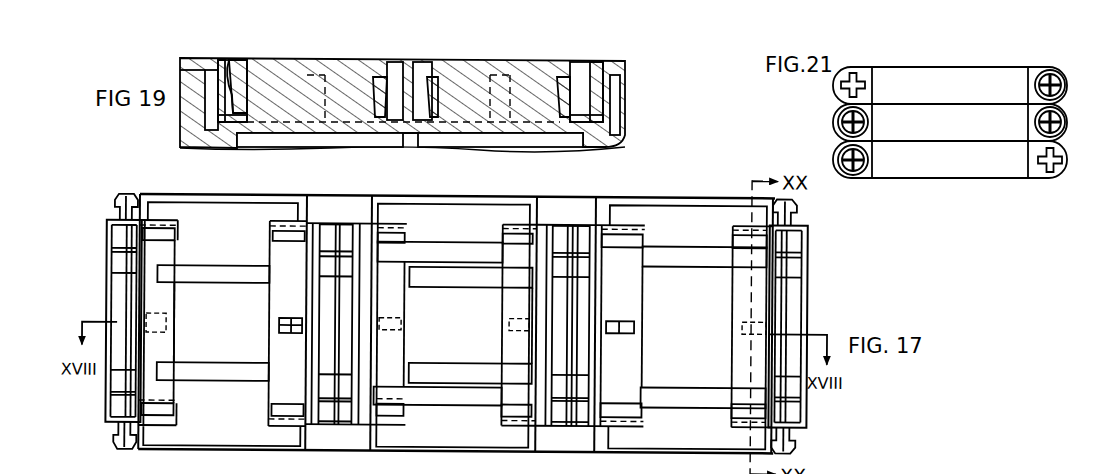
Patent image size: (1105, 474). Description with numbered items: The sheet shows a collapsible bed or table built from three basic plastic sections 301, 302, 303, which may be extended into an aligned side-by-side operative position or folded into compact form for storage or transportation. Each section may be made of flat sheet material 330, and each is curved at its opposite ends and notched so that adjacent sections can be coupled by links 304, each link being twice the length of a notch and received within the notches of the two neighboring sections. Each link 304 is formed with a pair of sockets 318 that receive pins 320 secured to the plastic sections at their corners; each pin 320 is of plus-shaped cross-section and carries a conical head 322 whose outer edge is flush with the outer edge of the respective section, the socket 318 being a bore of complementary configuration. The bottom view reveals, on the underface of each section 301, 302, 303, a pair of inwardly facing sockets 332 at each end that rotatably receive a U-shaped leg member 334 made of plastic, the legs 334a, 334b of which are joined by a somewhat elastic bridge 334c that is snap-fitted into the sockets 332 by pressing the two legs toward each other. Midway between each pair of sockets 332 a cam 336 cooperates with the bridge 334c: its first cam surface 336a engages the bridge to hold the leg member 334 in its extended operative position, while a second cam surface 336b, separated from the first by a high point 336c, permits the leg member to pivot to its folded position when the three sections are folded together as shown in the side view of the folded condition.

In FIG. 19, the plastic section 301 is at (190, 62).
In FIG. 21, the plastic section 301 is at (968, 172).
In FIG. 17, the plastic section 301 is at (253, 212).
In FIG. 19, the plastic section 302 is at (608, 66).
In FIG. 21, the plastic section 302 is at (968, 134).
In FIG. 17, the plastic section 302 is at (437, 212).
In FIG. 21, the plastic section 303 is at (968, 97).
In FIG. 17, the plastic section 303 is at (662, 212).
In FIG. 19, the link 304 is at (222, 66).
In FIG. 21, the link 304 is at (834, 126).
In FIG. 19, the socket 318 is at (240, 80).
In FIG. 19, the pin 320 is at (283, 75).
In FIG. 21, the pin 320 is at (848, 72).
In FIG. 17, the pin 320 is at (116, 208).
In FIG. 19, the conical head 322 is at (363, 72).
In FIG. 17, the flat sheet material 330 is at (221, 466).
In FIG. 17, the inwardly facing socket 332 is at (165, 213).
In FIG. 17, the U-shaped leg member 334 is at (172, 297).
In FIG. 17, the leg 334a is at (200, 272).
In FIG. 17, the leg 334b is at (198, 372).
In FIG. 17, the bridge 334c is at (170, 343).
In FIG. 17, the cam 336 is at (170, 320).
In FIG. 17, the first cam surface 336a is at (286, 324).
In FIG. 17, the second cam surface 336b is at (288, 330).
In FIG. 17, the high point 336c is at (294, 333).